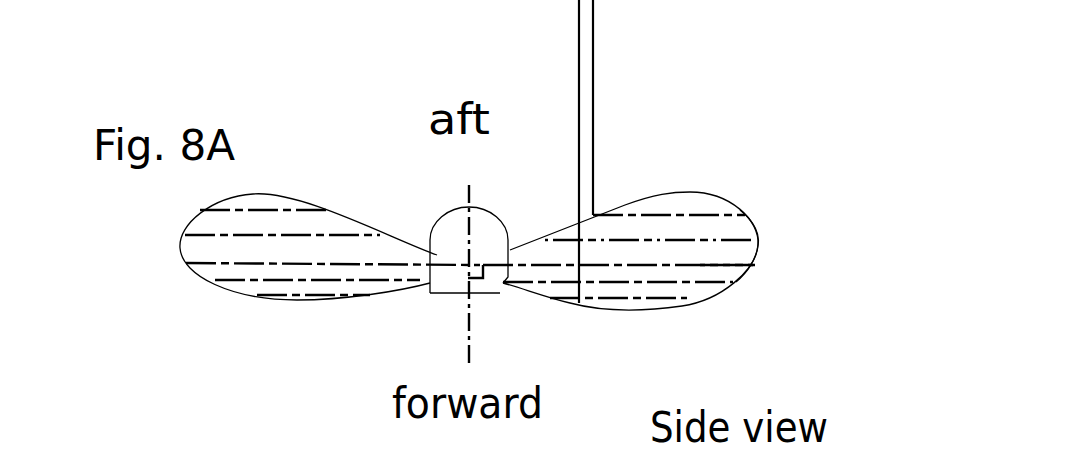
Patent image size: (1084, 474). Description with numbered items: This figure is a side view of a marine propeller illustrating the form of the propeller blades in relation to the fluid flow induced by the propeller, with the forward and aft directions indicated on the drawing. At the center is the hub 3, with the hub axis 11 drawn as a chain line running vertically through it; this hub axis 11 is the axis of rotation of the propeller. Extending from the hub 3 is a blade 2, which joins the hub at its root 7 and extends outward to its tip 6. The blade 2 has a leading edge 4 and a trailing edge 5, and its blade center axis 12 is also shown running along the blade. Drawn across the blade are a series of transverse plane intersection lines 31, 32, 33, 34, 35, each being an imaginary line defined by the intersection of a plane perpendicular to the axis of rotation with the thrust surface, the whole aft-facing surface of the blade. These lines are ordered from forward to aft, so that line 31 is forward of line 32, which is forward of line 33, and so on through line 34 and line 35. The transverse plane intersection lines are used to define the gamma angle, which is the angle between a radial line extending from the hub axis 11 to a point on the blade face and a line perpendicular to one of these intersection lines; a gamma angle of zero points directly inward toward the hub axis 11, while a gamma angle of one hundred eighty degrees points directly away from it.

The blade 2 is at (572, 200).
The hub 3 is at (431, 272).
The leading edge 4 is at (564, 317).
The trailing edge 5 is at (640, 184).
The tip 6 is at (773, 247).
The root 7 is at (508, 295).
The hub axis 11 is at (461, 263).
The blade center axis 12 is at (637, 281).
The transverse plane intersection line 31 is at (681, 313).
The transverse plane intersection line 32 is at (715, 293).
The transverse plane intersection line 33 is at (740, 276).
The transverse plane intersection line 34 is at (746, 230).
The transverse plane intersection line 35 is at (717, 204).